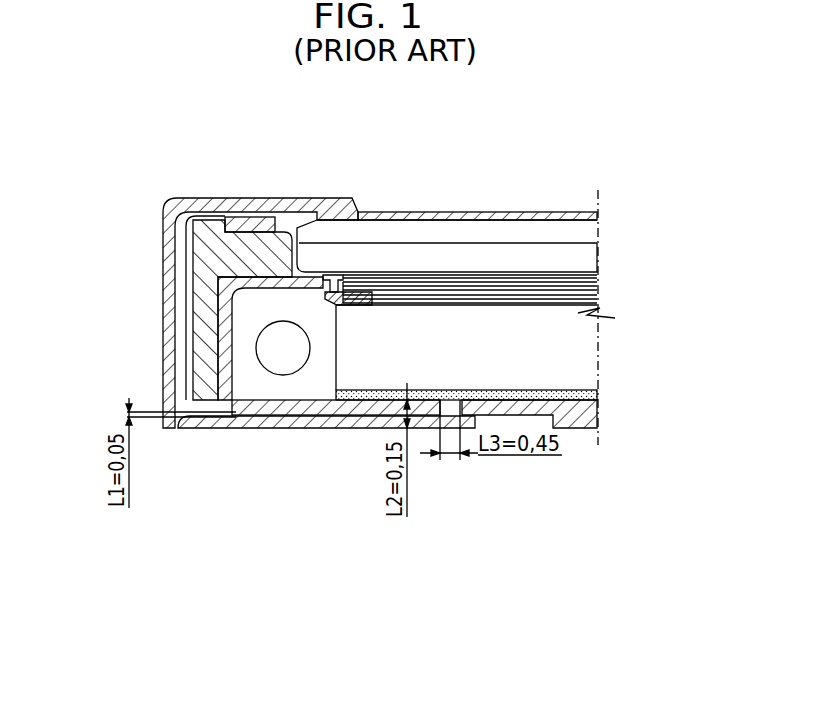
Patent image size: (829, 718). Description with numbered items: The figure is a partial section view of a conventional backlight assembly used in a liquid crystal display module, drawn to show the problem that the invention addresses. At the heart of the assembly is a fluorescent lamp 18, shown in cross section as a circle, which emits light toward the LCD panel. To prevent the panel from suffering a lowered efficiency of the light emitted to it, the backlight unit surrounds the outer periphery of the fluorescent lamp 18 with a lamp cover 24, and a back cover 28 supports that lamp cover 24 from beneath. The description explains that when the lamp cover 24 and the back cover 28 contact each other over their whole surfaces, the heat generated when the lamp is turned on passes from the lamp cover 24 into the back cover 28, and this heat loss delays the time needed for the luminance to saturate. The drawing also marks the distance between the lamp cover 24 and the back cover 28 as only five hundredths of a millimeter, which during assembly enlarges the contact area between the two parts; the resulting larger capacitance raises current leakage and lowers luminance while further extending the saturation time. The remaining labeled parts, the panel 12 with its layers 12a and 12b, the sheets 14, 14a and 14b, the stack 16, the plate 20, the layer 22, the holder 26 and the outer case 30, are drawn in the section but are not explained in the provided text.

The liquid crystal panel 12 is at (520, 248).
The upper substrate 12a is at (588, 233).
The lower substrate 12b is at (588, 262).
The polarizing plates 14 is at (470, 184).
The upper polarizing plate 14a is at (373, 213).
The lower polarizing plate 14b is at (427, 273).
The optical sheets 16 is at (601, 278).
The fluorescent lamp 18 is at (257, 357).
The light guide plate 20 is at (592, 347).
The reflection sheet 22 is at (592, 395).
The lamp cover 24 is at (357, 425).
The lamp holder 26 is at (193, 289).
The back cover 28 is at (590, 425).
The front case 30 is at (163, 233).